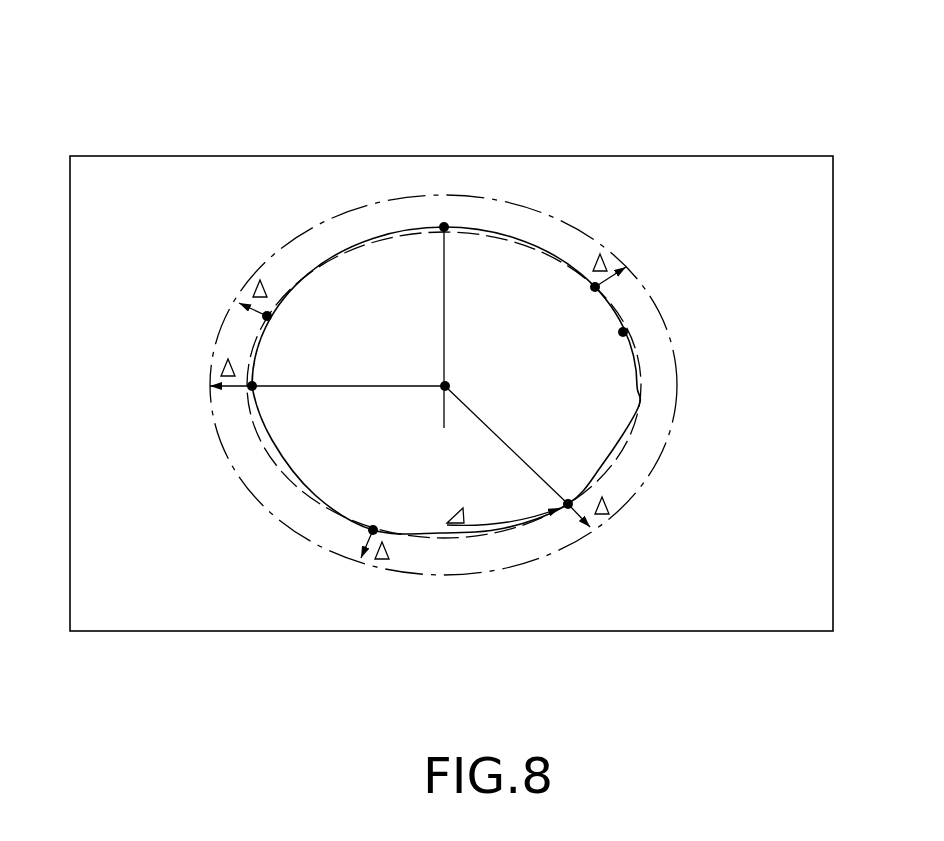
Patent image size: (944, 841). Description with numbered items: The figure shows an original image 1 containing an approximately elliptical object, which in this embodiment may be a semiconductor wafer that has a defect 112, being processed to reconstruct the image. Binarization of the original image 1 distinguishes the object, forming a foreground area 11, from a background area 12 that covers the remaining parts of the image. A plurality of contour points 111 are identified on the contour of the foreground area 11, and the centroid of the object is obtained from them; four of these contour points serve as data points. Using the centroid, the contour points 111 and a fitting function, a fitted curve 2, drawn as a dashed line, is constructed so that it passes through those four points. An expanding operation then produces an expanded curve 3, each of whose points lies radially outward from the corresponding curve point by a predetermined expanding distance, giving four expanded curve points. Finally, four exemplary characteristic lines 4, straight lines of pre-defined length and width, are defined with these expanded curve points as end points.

The original image 1 is at (552, 133).
The background area 12 is at (752, 168).
The foreground area 11 is at (629, 372).
The contour points 111 is at (443, 227).
The defect 112 is at (462, 537).
The fitted curve 2 is at (244, 408).
The expanded curve 3 is at (242, 490).
The characteristic lines 4 is at (438, 310).